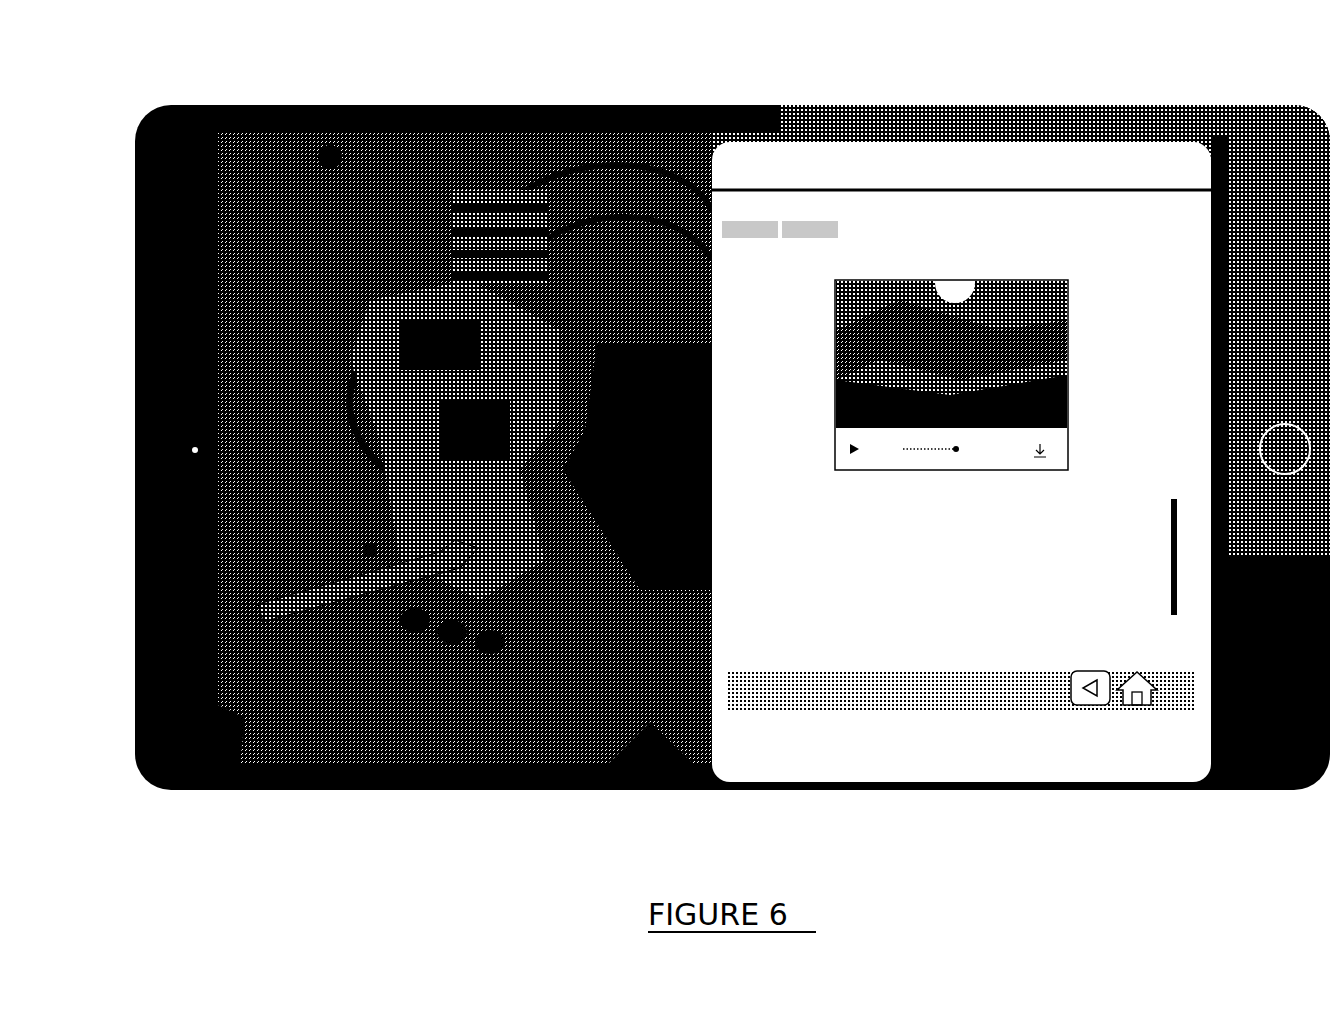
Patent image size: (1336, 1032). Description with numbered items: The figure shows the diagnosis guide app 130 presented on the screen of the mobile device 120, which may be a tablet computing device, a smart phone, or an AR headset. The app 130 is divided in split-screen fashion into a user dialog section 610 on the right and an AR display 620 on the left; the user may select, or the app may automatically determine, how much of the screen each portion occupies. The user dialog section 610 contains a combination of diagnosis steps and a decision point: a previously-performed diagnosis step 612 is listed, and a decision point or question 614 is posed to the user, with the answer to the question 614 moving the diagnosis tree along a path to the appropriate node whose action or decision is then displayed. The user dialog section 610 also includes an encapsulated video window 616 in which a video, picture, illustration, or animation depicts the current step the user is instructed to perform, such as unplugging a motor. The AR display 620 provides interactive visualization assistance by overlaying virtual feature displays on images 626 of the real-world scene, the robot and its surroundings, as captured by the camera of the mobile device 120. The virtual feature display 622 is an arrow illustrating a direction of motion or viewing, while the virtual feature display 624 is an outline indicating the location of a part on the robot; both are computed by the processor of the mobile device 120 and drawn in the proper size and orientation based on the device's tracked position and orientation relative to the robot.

The mobile device 120 is at (1253, 792).
The diagnosis guide app 130 is at (1222, 125).
The user dialog section 610 is at (961, 493).
The previously-performed diagnosis step 612 is at (1012, 510).
The decision point (question) 614 is at (848, 636).
The encapsulated video window 616 is at (1085, 378).
The AR display 620 is at (465, 453).
The virtual feature display 622 is at (420, 582).
The virtual feature display 624 is at (535, 535).
The images of the real-world scene 626 is at (352, 283).